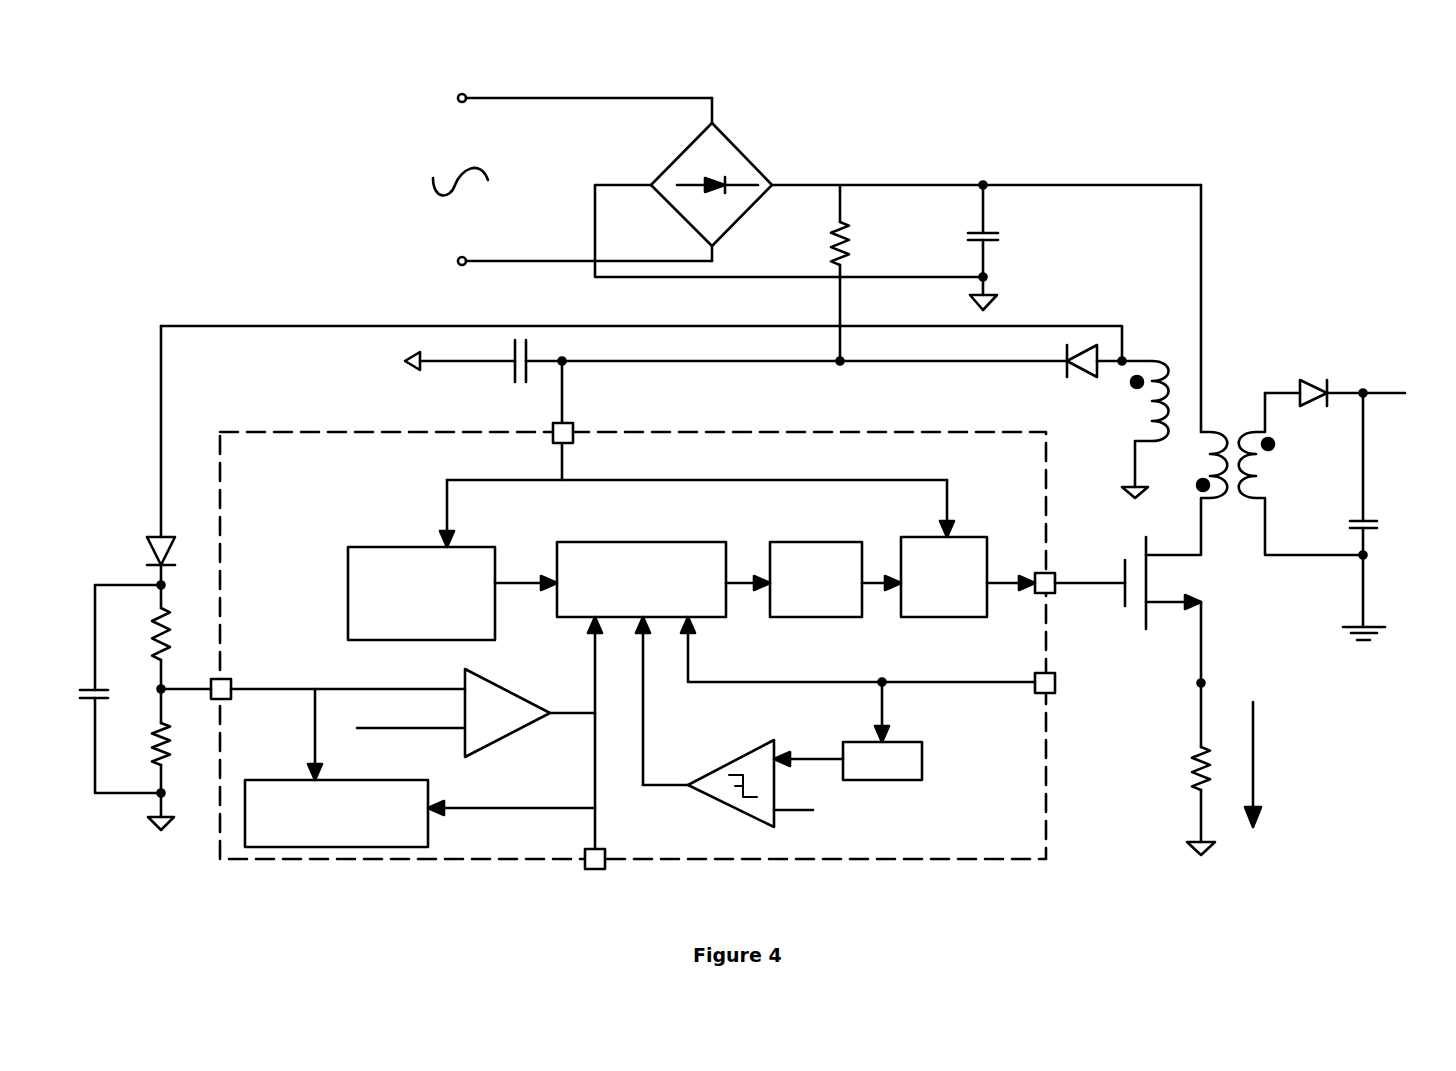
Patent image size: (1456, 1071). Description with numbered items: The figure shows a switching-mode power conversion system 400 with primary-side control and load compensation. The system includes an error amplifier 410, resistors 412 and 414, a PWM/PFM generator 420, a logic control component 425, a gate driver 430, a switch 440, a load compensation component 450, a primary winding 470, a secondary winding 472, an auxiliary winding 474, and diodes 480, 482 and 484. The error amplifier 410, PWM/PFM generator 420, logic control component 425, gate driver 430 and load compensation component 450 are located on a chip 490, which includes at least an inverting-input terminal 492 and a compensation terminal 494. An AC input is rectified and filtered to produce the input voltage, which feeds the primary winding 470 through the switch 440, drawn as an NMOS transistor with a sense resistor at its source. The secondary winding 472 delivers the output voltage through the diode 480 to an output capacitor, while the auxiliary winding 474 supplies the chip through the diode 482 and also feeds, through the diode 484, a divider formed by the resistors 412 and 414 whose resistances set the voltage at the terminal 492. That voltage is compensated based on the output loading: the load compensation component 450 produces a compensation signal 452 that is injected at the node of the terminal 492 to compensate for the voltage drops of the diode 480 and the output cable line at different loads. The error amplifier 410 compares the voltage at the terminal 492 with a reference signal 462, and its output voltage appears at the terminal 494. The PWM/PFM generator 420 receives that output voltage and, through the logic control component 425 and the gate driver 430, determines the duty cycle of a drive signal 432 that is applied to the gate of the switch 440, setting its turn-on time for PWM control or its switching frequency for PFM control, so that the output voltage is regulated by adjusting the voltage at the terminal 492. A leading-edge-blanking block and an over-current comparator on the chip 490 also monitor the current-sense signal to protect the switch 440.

The switching-mode power conversion system 400 is at (226, 181).
The error amplifier 410 is at (525, 729).
The resistor 412 is at (156, 643).
The resistor 414 is at (156, 752).
The PWM/PFM generator 420 is at (622, 542).
The logic control component 425 is at (797, 542).
The gate driver 430 is at (991, 540).
The drive signal 432 is at (999, 589).
The switch 440 is at (1120, 595).
The load compensation component 450 is at (343, 847).
The compensation signal 452 is at (315, 715).
The reference signal 462 is at (422, 729).
The primary winding 470 is at (1215, 500).
The secondary winding 472 is at (1248, 432).
The auxiliary winding 474 is at (1152, 412).
The diode 480 is at (1316, 406).
The diode 482 is at (1067, 352).
The diode 484 is at (177, 527).
The chip 490 is at (885, 860).
The terminal 492 is at (219, 699).
The terminal 494 is at (585, 863).